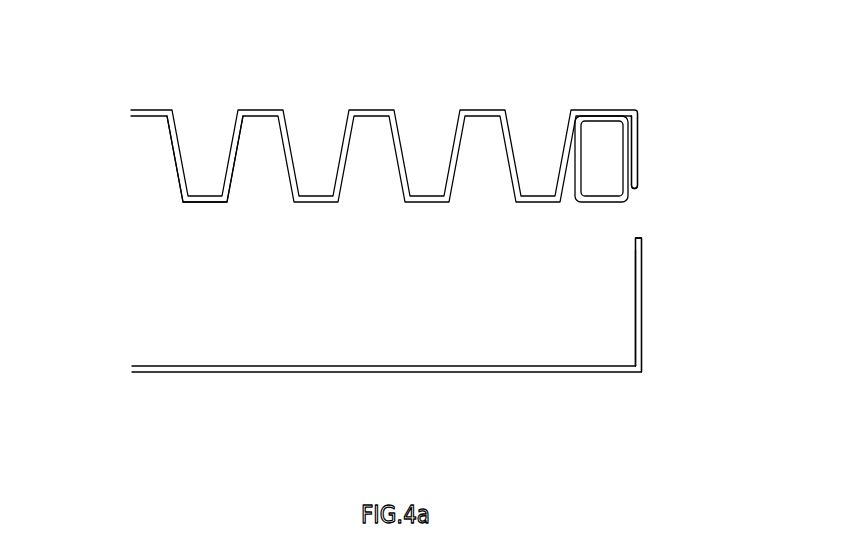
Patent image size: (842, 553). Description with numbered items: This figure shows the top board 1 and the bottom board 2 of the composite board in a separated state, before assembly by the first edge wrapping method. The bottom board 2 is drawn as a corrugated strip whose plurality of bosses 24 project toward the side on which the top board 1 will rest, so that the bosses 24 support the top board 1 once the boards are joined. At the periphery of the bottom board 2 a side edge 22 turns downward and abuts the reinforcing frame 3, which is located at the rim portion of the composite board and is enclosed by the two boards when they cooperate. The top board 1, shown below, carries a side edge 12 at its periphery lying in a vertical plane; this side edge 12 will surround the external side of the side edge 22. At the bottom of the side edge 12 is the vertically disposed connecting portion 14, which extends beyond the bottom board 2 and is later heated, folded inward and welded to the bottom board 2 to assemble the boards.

The top board 1 is at (182, 372).
The bottom board 2 is at (155, 110).
The reinforcing frame 3 is at (622, 110).
The side edge 12 is at (640, 322).
The connecting portion 14 is at (642, 243).
The side edge 22 is at (633, 160).
The bosses 24 is at (182, 190).